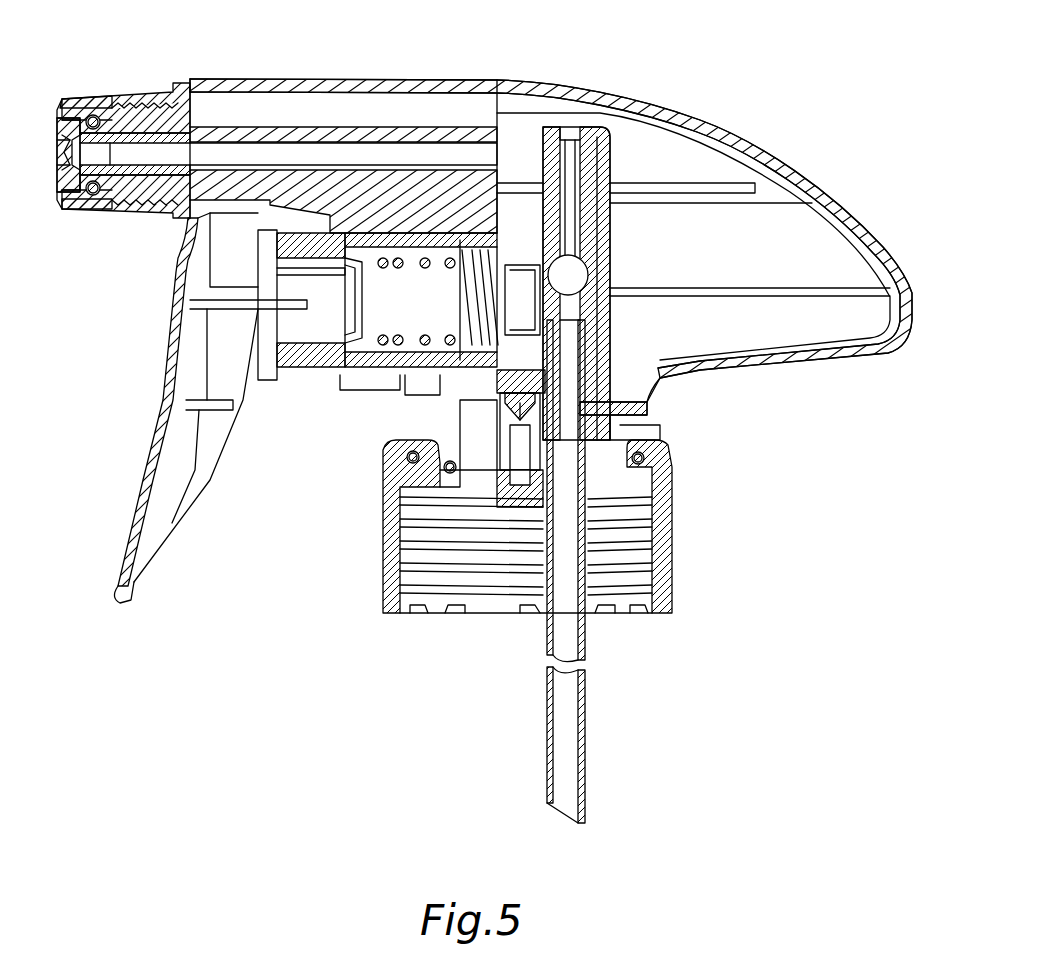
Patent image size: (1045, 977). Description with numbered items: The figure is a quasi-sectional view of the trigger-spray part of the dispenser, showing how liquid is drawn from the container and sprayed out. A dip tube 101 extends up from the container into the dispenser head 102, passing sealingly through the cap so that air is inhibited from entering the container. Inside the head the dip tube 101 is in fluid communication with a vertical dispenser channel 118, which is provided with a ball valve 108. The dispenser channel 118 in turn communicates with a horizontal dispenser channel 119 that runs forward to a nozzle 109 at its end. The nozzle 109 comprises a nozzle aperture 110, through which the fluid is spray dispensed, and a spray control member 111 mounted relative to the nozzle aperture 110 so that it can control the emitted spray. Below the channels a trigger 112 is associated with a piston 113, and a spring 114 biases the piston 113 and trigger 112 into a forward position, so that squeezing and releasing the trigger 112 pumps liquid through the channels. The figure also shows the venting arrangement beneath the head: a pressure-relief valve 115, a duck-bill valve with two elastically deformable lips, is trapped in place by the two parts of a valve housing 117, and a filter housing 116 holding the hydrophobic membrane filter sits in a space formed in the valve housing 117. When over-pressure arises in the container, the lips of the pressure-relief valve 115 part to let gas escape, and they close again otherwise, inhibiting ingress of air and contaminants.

The dip tube 101 is at (575, 768).
The dispenser head 102 is at (812, 198).
The ball valve 108 is at (588, 266).
The nozzle 109 is at (138, 91).
The nozzle aperture 110 is at (73, 207).
The spray control member 111 is at (73, 97).
The trigger 112 is at (123, 577).
The piston 113 is at (285, 320).
The spring 114 is at (445, 345).
The pressure-relief valve 115 is at (520, 404).
The filter housing 116 is at (517, 507).
The valve housing 117 is at (497, 477).
The dispenser channel 118 is at (567, 183).
The dispenser channel 119 is at (260, 140).